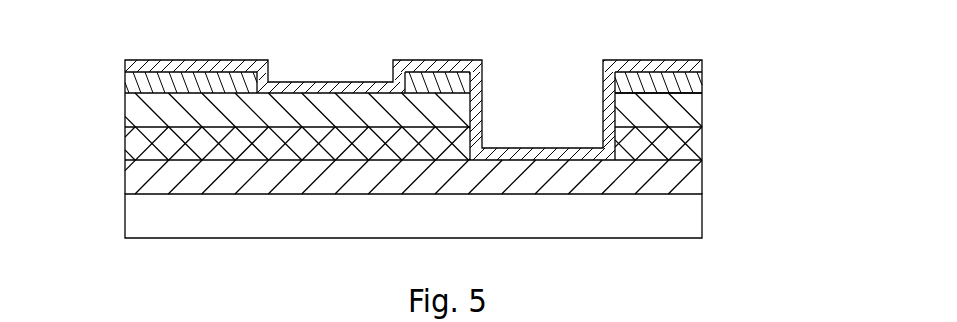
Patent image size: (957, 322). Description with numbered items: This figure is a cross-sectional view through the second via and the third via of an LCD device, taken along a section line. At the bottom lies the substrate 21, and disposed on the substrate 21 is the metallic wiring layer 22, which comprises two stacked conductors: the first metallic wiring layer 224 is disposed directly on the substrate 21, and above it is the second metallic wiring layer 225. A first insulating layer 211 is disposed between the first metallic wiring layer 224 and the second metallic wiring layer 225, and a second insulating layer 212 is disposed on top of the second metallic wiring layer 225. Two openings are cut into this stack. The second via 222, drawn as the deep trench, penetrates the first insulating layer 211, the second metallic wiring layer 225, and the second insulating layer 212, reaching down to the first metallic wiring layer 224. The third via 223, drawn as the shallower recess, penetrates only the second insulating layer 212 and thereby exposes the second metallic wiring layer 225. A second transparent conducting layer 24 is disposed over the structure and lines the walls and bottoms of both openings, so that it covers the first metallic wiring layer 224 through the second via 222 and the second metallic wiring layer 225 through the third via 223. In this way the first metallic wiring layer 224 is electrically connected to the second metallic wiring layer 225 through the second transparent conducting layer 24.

The substrate 21 is at (692, 227).
The first insulating layer 211 is at (130, 142).
The second insulating layer 212 is at (125, 87).
The metallic wiring layer 22 is at (773, 83).
The second via 222 is at (548, 85).
The third via 223 is at (325, 73).
The first metallic wiring layer 224 is at (692, 183).
The second metallic wiring layer 225 is at (698, 125).
The second transparent conducting layer 24 is at (678, 62).